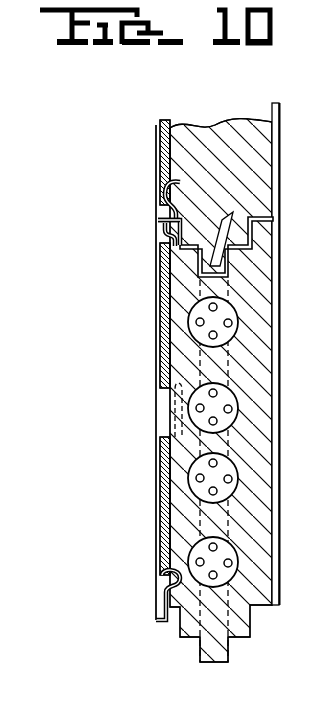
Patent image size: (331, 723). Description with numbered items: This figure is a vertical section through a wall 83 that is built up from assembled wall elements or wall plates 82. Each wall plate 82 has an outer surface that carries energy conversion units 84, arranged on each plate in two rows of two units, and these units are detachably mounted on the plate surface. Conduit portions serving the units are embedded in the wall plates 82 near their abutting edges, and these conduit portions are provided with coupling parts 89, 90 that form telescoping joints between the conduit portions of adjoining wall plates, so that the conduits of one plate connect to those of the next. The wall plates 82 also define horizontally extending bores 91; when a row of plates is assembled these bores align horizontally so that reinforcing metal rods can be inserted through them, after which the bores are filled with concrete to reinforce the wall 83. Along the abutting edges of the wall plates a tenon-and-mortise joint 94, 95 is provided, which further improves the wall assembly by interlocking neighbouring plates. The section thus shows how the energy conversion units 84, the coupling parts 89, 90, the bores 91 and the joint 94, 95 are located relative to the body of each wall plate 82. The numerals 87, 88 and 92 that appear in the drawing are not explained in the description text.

The wall plate 82 is at (250, 137).
The wall 83 is at (150, 352).
The energy conversion unit 84 is at (158, 300).
The lower bend of clip 87 is at (160, 233).
The upper clip 88 is at (158, 212).
The coupling part 89 is at (135, 226).
The coupling part 90 is at (158, 218).
The horizontally extending bore 91 is at (227, 330).
The holes 92 is at (200, 410).
The tenon-and-mortise joint 94 is at (223, 272).
The tenon-and-mortise joint 95 is at (262, 213).